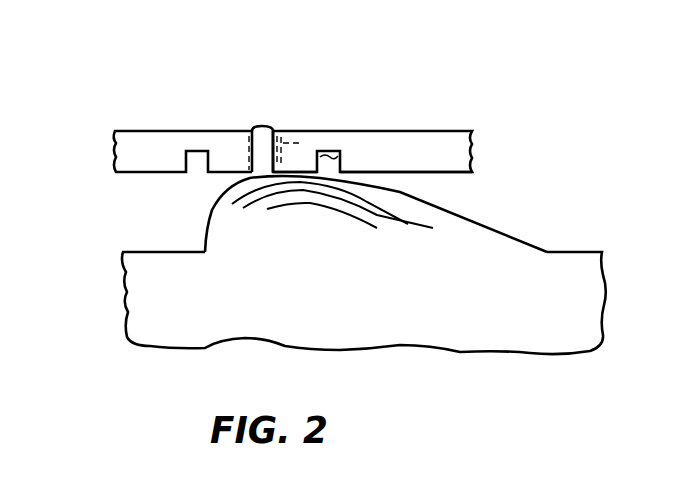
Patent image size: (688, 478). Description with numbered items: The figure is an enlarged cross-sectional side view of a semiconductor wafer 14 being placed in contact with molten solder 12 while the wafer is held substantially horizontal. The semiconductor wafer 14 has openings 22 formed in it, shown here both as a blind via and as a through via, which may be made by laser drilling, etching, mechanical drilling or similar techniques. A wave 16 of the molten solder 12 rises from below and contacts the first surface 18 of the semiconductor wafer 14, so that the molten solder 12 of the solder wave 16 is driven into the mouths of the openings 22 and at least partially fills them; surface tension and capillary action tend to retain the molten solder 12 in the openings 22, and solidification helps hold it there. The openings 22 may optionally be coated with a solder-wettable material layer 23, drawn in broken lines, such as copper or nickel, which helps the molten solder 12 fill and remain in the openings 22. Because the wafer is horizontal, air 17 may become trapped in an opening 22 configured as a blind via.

The molten solder 12 is at (238, 310).
The semiconductor wafer 14 is at (472, 147).
The solder wave 16 is at (205, 222).
The air 17 is at (348, 150).
The first surface 18 is at (438, 175).
The openings 22 is at (197, 172).
The material layer 23 is at (305, 140).